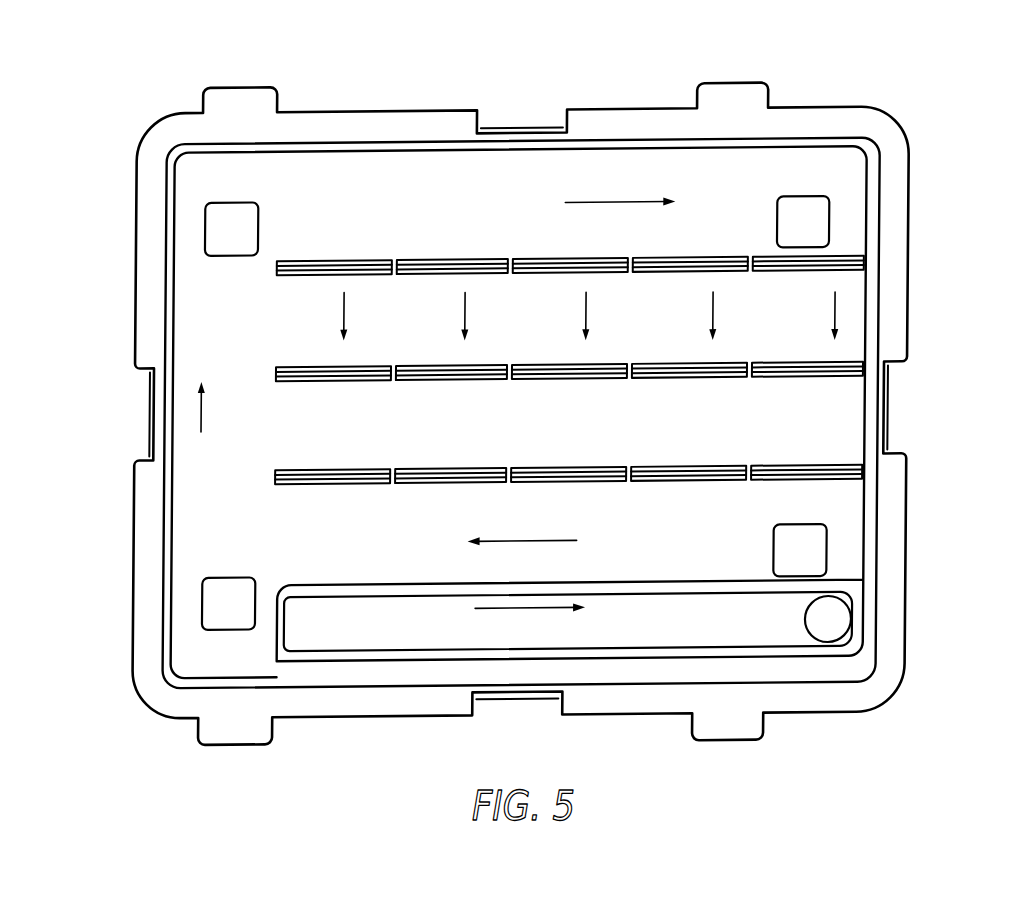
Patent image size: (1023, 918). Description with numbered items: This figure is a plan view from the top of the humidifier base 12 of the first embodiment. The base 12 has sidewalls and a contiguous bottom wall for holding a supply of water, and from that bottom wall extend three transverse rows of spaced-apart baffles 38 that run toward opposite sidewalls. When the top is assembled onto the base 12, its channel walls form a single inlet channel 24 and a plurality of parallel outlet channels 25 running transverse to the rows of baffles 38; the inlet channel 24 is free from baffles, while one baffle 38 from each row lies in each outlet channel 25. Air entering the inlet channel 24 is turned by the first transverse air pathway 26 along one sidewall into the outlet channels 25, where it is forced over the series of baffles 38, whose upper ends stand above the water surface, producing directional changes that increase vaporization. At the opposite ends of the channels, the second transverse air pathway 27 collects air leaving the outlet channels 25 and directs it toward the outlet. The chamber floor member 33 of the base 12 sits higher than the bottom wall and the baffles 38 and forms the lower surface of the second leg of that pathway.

The humidifier base 12 is at (930, 235).
The inlet channel 24 is at (218, 407).
The outlet channels 25 is at (572, 316).
The first transverse air pathway 26 is at (620, 190).
The second transverse air pathway 27 is at (526, 586).
The chamber floor member 33 is at (667, 605).
The baffles 38 is at (438, 262).